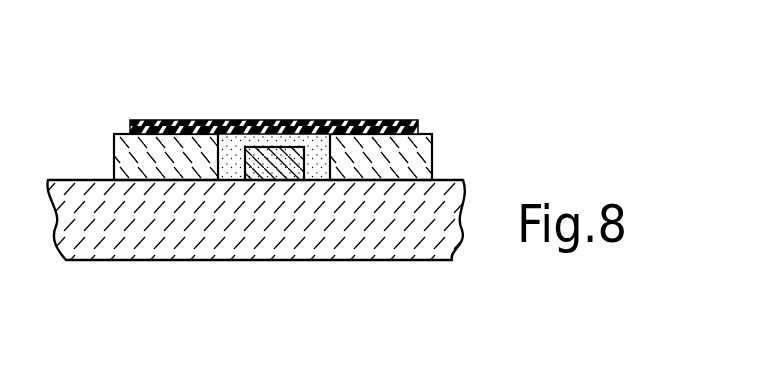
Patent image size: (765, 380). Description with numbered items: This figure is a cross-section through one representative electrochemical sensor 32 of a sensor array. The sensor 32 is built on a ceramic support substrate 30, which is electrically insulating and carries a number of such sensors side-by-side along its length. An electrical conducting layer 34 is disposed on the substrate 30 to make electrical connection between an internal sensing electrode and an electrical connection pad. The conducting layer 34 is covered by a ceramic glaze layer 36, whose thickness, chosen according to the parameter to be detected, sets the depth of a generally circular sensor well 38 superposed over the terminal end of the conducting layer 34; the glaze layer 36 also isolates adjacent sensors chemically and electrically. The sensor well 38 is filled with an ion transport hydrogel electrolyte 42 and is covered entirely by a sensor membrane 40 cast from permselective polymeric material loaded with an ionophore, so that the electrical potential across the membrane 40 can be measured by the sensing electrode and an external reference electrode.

The ceramic support substrate 30 is at (314, 228).
The electrochemical sensor 32 is at (430, 113).
The electrical conducting layer 34 is at (283, 160).
The ceramic glaze layer 36 is at (123, 162).
The sensor well 38 is at (225, 148).
The sensor membrane 40 is at (151, 121).
The hydrogel electrolyte 42 is at (233, 143).